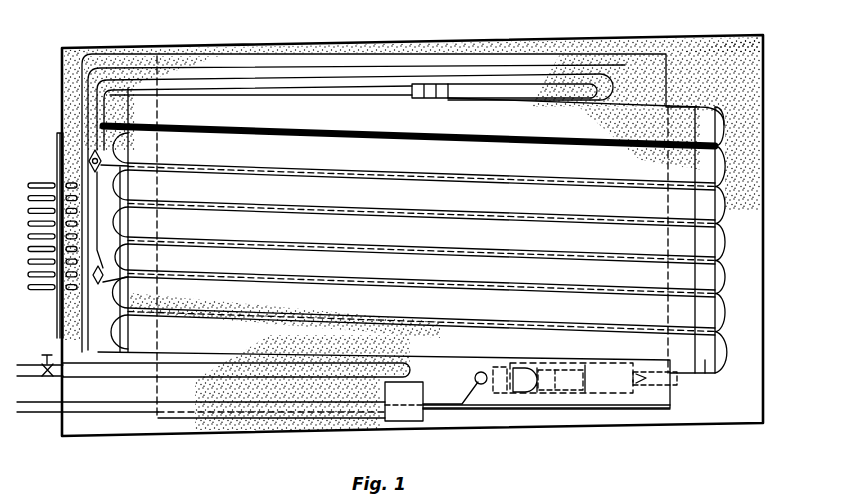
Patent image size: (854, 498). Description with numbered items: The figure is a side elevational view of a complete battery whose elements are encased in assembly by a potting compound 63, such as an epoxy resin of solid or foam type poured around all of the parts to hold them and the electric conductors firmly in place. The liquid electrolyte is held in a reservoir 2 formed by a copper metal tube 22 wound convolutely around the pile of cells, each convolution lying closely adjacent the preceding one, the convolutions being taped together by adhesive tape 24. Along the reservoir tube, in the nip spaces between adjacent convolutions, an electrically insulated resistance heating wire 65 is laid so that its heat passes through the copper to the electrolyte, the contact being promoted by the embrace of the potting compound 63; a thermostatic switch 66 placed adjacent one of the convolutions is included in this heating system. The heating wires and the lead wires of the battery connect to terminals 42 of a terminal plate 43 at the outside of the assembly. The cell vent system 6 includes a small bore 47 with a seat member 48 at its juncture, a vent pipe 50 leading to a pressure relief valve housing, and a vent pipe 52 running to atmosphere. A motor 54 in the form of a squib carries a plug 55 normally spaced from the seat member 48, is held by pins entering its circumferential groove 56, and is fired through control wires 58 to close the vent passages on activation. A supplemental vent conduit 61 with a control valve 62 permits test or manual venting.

The electrolyte reservoir 2 is at (728, 206).
The cell vent system 6 is at (548, 404).
The metal tube 22 is at (723, 318).
The adhesive tape 24 is at (705, 375).
The terminals 42 is at (50, 288).
The terminal plate 43 is at (54, 141).
The small bore 47 is at (471, 372).
The seat member 48 is at (506, 374).
The vent pipe 50 is at (465, 395).
The vent pipe 52 is at (47, 414).
The motor 54 is at (566, 368).
The plug 55 is at (510, 395).
The circumferential groove 56 is at (608, 408).
The control wires 58 is at (672, 393).
The vent conduit 61 is at (46, 377).
The control valve 62 is at (46, 355).
The potting compound 63 is at (735, 70).
The resistance heating wire 65 is at (470, 220).
The thermostatic switch 66 is at (513, 92).